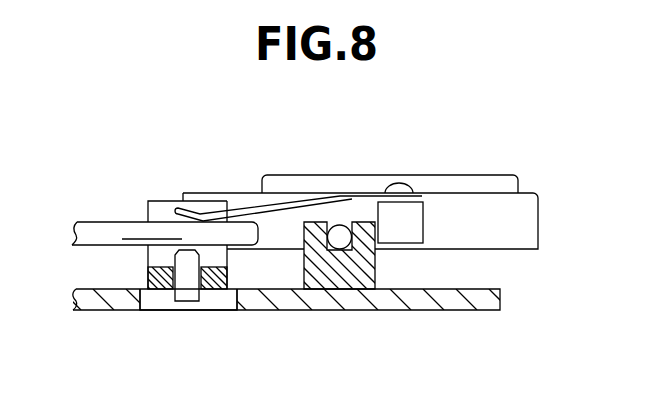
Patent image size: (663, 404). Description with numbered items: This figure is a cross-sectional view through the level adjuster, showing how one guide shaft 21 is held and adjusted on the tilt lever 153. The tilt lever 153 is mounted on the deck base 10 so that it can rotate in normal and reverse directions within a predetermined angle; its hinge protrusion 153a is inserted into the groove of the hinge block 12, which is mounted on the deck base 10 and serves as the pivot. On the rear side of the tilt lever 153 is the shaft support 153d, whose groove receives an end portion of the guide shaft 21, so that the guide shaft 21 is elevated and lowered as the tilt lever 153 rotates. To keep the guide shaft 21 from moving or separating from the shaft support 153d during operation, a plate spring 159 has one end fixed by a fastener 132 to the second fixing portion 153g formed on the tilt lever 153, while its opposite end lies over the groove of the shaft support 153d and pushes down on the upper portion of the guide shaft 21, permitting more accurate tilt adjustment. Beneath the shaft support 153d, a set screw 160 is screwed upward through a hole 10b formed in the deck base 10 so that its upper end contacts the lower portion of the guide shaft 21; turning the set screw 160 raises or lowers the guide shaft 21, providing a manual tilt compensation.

The deck base 10 is at (500, 298).
The hole 10b is at (237, 300).
The hinge block 12 is at (337, 277).
The guide shaft 21 is at (95, 227).
The fastener 132 is at (400, 190).
The tilt lever 153 is at (535, 218).
The hinge protrusion 153a is at (337, 225).
The shaft support 153d is at (153, 201).
The second fixing portion 153g is at (397, 238).
The plate spring 159 is at (243, 208).
The set screw 160 is at (185, 293).